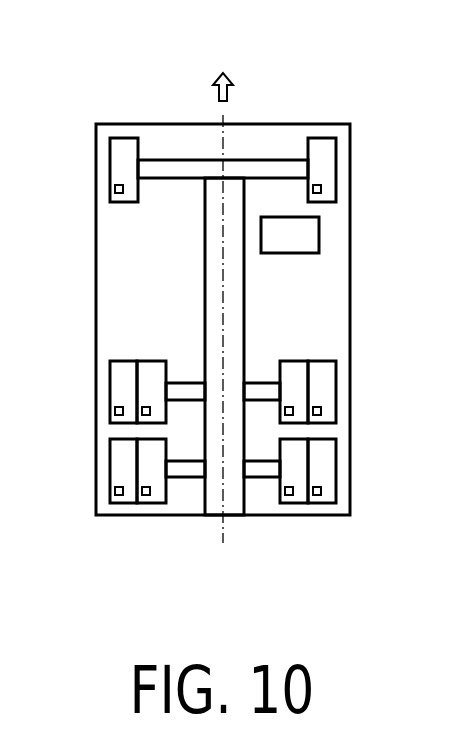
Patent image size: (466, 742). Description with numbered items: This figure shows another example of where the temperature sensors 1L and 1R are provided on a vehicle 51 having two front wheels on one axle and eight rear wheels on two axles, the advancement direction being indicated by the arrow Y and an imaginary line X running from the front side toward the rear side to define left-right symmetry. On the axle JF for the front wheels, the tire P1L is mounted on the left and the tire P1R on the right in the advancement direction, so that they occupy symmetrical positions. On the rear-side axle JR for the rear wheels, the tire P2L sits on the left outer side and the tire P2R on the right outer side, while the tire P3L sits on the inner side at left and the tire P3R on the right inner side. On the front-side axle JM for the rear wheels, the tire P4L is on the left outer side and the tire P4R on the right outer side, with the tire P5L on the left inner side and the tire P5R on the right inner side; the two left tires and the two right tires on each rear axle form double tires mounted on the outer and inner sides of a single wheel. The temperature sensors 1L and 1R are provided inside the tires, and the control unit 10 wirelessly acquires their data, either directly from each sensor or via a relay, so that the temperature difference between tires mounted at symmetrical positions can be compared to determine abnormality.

The vehicle 51 is at (354, 124).
The control unit 10 is at (319, 235).
The temperature sensor 1L is at (115, 189).
The temperature sensor 1R is at (321, 189).
The tire P1L is at (123, 138).
The tire P1R is at (323, 138).
The tire P2L is at (110, 475).
The tire P2R is at (336, 470).
The tire P3L is at (155, 503).
The tire P3R is at (300, 503).
The tire P4L is at (110, 376).
The tire P4R is at (336, 373).
The tire P5L is at (147, 361).
The tire P5R is at (293, 361).
The axle JF is at (173, 160).
The front-side axle JM is at (253, 383).
The rear-side axle JR is at (243, 480).
The imaginary line X is at (223, 268).
The arrow Y is at (232, 90).